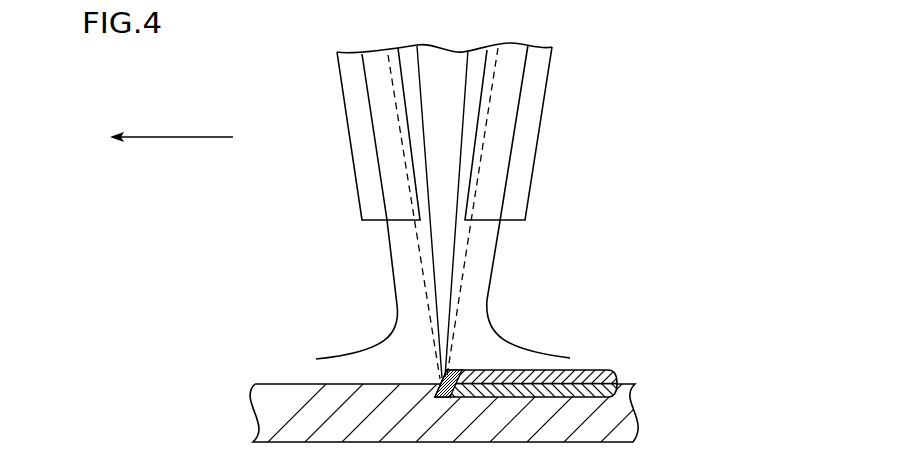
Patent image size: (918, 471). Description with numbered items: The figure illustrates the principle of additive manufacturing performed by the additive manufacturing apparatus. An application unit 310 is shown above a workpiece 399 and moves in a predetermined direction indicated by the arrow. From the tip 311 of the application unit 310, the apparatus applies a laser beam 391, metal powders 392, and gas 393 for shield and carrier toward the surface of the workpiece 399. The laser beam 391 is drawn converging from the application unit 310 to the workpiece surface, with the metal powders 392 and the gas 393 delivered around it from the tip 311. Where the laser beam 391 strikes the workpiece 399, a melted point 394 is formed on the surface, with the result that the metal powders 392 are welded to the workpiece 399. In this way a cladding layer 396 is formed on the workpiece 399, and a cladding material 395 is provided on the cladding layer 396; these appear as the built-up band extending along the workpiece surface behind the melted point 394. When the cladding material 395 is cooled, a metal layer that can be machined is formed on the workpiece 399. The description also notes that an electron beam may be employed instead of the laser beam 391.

The application unit 310 is at (484, 211).
The tip 311 is at (518, 180).
The laser beam 391 is at (437, 292).
The metal powders 392 is at (417, 255).
The gas 393 is at (390, 340).
The melted point 394 is at (460, 368).
The cladding material 395 is at (587, 371).
The cladding layer 396 is at (587, 390).
The workpiece 399 is at (615, 417).